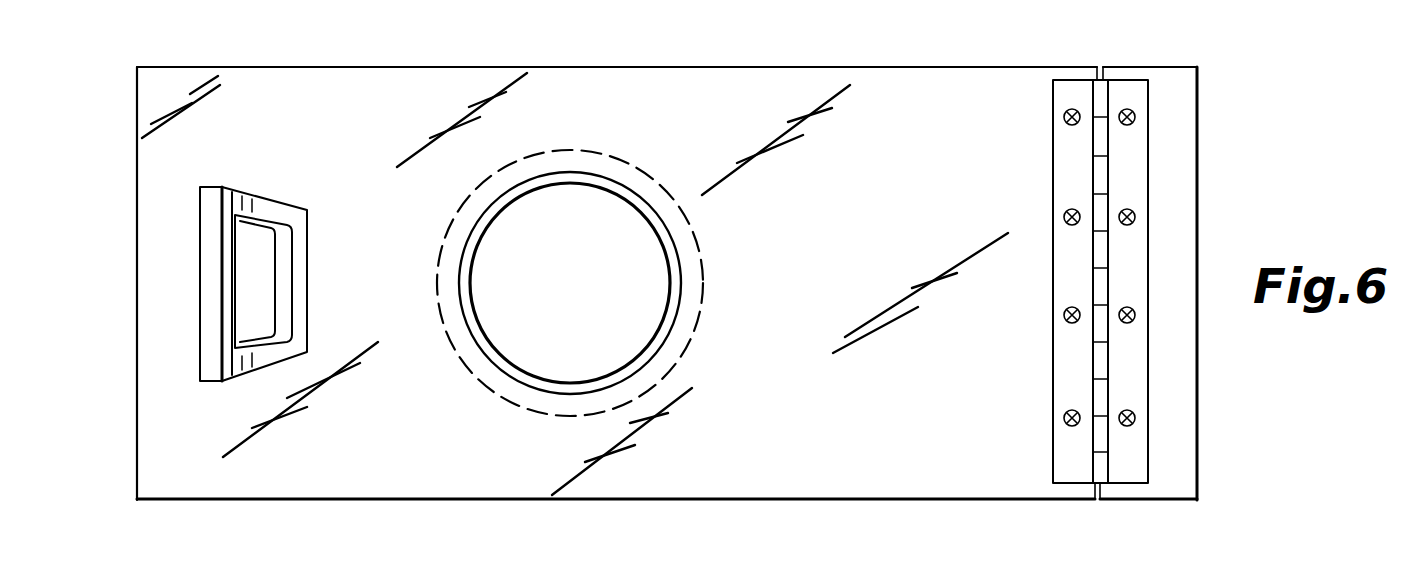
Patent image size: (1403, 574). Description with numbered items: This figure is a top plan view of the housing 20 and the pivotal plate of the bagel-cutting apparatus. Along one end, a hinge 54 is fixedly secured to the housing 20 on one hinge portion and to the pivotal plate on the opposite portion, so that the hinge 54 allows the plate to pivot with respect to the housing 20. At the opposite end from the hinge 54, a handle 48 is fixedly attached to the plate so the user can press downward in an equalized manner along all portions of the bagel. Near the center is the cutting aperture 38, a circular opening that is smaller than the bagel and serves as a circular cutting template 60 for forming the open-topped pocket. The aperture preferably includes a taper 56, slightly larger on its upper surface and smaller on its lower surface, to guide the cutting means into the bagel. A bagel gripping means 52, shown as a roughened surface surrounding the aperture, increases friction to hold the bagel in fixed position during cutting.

The housing 20 is at (1197, 111).
The cutting aperture 38 is at (663, 250).
The handle 48 is at (263, 196).
The bagel gripping means 52 is at (483, 386).
The hinge 54 is at (1053, 414).
The taper 56 is at (510, 194).
The circular cutting template 60 is at (582, 307).